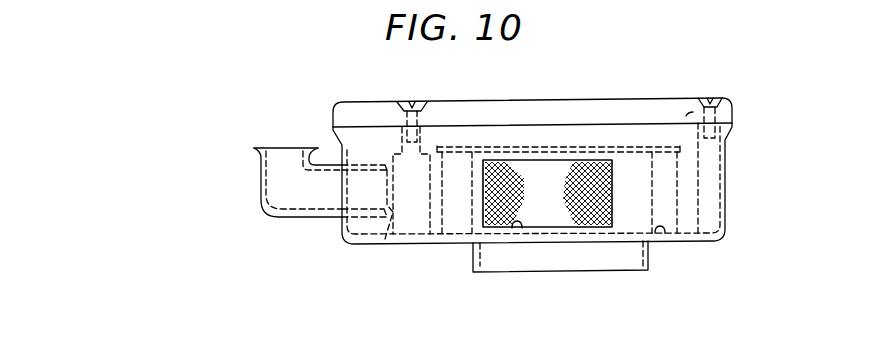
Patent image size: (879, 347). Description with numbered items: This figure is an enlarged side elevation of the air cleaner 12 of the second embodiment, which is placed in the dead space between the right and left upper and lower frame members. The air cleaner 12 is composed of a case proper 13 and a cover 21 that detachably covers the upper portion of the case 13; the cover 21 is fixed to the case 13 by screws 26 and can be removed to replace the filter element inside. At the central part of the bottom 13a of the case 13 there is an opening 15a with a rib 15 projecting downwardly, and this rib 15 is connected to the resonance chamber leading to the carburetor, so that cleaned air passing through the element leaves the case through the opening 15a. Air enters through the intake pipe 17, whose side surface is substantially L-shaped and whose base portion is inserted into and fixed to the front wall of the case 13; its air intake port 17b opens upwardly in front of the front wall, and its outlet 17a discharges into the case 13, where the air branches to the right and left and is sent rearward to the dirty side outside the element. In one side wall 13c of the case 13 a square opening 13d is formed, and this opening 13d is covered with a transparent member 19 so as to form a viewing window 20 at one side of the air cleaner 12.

The air cleaner 12 is at (727, 187).
The case proper 13 is at (690, 213).
The bottom 13a is at (664, 234).
The side wall 13c is at (607, 133).
The square opening 13d is at (518, 228).
The rib 15 is at (582, 258).
The opening 15a is at (627, 270).
The intake pipe 17 is at (280, 198).
The outlet 17a is at (383, 248).
The air intake port 17b is at (283, 154).
The transparent member 19 is at (547, 178).
The viewing window 20 is at (550, 206).
The cover 21 is at (492, 107).
The screws 26 is at (415, 101).